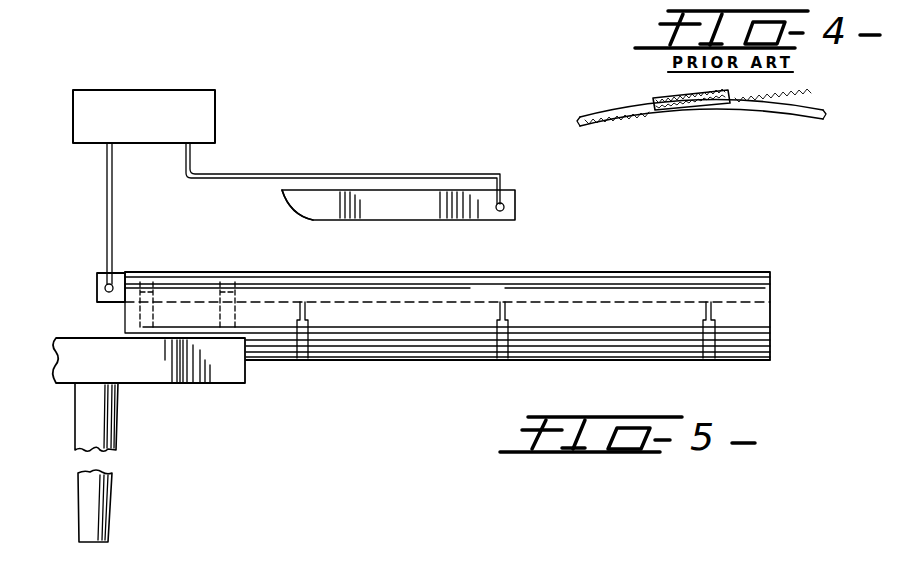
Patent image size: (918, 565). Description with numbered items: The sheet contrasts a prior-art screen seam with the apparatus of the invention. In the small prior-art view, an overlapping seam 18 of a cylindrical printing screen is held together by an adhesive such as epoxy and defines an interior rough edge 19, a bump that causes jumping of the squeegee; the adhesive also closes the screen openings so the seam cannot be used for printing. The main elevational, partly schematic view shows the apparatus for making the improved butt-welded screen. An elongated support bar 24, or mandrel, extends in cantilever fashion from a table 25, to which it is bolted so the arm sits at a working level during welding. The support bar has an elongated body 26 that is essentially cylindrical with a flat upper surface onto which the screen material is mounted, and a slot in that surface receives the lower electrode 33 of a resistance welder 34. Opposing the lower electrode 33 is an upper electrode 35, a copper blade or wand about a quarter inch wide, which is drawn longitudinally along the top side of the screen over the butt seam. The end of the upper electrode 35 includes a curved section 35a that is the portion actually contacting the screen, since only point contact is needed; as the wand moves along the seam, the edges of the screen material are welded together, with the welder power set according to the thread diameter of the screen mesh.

In FIG. 4, the overlapping seam 18 is at (700, 92).
In FIG. 4, the interior rough edge 19 is at (730, 105).
In FIG. 5, the support bar 24 is at (772, 322).
In FIG. 5, the table 25 is at (80, 337).
In FIG. 5, the elongated body 26 is at (610, 348).
In FIG. 5, the lower electrode 33 is at (118, 276).
In FIG. 5, the resistance welder 34 is at (165, 92).
In FIG. 5, the upper electrode 35 is at (400, 200).
In FIG. 5, the curved section 35a is at (290, 198).